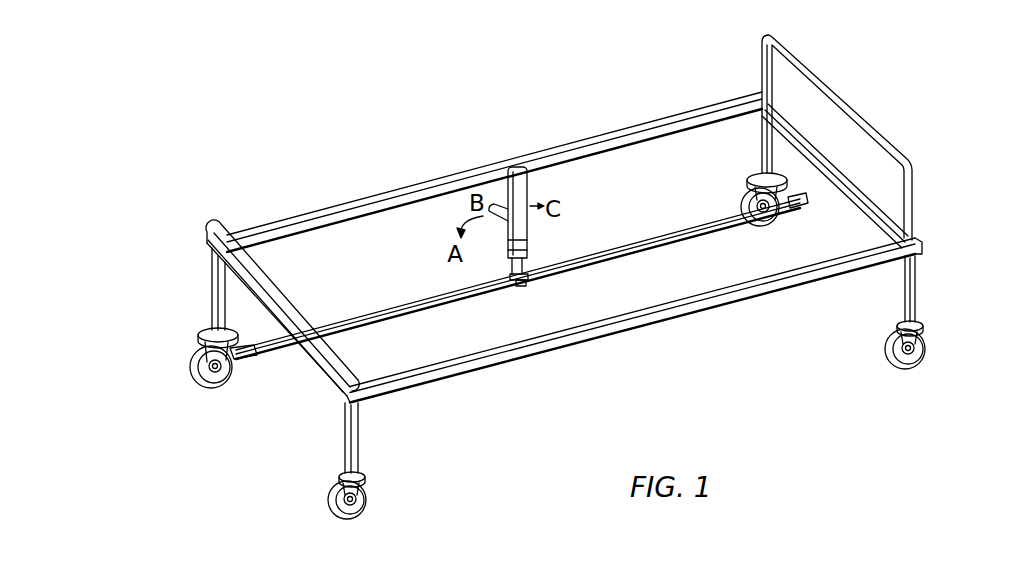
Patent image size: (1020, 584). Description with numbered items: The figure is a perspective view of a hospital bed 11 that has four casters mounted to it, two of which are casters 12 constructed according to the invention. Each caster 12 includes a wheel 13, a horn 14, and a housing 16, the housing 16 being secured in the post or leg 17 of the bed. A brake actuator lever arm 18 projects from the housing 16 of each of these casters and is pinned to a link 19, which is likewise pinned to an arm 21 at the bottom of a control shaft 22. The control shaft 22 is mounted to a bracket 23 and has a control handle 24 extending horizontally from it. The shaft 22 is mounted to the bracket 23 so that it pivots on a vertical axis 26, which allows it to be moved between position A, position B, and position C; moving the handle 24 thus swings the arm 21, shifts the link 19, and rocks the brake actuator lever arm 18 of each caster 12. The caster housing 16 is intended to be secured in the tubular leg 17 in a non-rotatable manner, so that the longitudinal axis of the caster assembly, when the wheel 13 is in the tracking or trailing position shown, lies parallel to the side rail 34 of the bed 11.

The hospital bed 11 is at (841, 47).
The caster 12 is at (436, 310).
The wheel 13 is at (181, 370).
The horn 14 is at (222, 366).
The housing 16 is at (200, 328).
The post or leg 17 is at (215, 288).
The brake actuator lever arm 18 is at (237, 354).
The link 19 is at (397, 308).
The arm 21 is at (525, 286).
The control shaft 22 is at (529, 277).
The bracket 23 is at (531, 187).
The control handle 24 is at (500, 210).
The vertical axis 26 is at (521, 245).
The side rail 34 is at (372, 200).